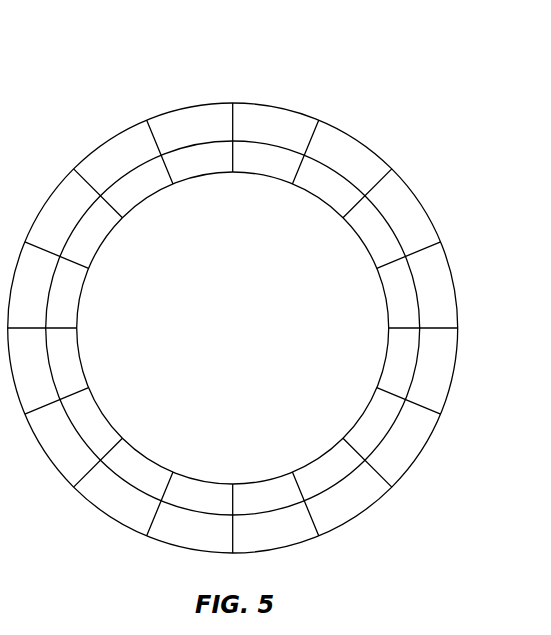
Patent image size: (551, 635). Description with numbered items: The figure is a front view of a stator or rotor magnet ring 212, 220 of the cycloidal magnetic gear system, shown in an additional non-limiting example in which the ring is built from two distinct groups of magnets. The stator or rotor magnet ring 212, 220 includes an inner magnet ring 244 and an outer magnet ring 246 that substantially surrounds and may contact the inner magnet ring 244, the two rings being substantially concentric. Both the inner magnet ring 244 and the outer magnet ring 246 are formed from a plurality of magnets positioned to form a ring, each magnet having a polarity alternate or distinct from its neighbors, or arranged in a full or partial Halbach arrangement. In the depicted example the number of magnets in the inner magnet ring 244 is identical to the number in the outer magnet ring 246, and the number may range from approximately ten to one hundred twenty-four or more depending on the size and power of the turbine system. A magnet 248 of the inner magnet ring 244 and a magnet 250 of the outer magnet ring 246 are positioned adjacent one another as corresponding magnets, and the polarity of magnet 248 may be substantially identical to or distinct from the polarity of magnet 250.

The stator magnet ring 212 is at (262, 285).
The rotor magnet ring 220 is at (262, 285).
The inner magnet ring 244 is at (200, 175).
The outer magnet ring 246 is at (118, 132).
The magnet 248 is at (388, 302).
The magnet 250 is at (456, 290).